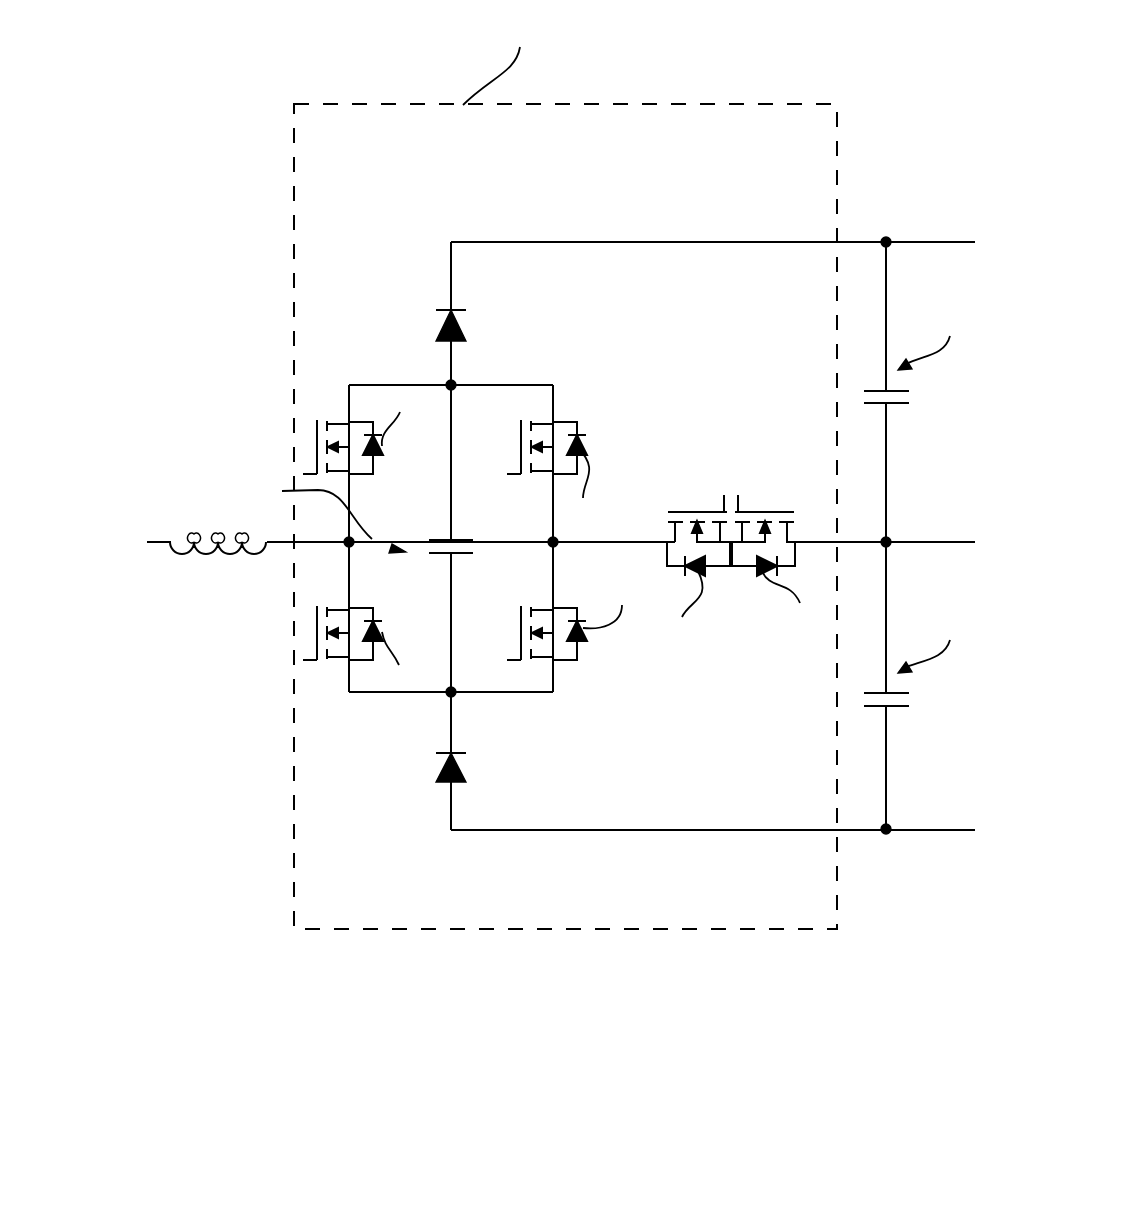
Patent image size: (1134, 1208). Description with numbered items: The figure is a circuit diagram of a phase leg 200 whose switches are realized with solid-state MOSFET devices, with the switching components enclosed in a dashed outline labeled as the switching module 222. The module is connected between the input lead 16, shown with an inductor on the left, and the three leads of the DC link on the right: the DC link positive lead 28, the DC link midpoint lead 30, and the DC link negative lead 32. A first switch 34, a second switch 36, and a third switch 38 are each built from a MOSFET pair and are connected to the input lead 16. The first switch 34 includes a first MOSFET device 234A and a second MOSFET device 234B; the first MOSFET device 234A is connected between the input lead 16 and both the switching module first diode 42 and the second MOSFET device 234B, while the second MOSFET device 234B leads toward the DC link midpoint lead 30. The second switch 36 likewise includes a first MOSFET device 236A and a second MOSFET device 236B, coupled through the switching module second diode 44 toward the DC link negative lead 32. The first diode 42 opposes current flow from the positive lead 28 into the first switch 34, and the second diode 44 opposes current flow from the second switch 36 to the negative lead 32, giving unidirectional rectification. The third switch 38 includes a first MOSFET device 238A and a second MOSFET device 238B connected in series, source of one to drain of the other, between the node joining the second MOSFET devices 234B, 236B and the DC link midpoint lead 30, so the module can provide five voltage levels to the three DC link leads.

The phase leg 200 is at (373, 965).
The switching module 222 is at (357, 151).
The input lead 16 is at (305, 543).
The DC link positive lead 28 is at (932, 242).
The DC link midpoint lead 30 is at (927, 542).
The DC link negative lead 32 is at (927, 829).
The first switch 34 is at (521, 409).
The second switch 36 is at (451, 710).
The third switch 38 is at (764, 562).
The switching module first diode 42 is at (438, 328).
The switching module second diode 44 is at (462, 770).
The first MOSFET device 234A is at (333, 413).
The second MOSFET device 234B is at (600, 433).
The first MOSFET device 236A is at (335, 649).
The second MOSFET device 236B is at (563, 652).
The first MOSFET device 238A is at (687, 522).
The second MOSFET device 238B is at (788, 514).